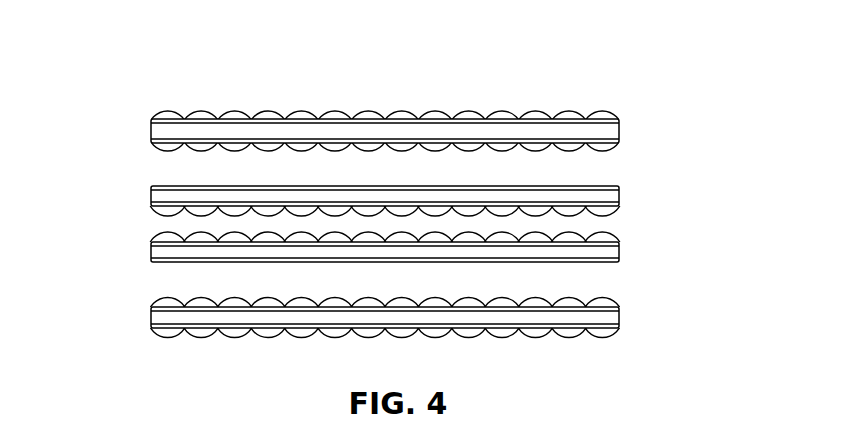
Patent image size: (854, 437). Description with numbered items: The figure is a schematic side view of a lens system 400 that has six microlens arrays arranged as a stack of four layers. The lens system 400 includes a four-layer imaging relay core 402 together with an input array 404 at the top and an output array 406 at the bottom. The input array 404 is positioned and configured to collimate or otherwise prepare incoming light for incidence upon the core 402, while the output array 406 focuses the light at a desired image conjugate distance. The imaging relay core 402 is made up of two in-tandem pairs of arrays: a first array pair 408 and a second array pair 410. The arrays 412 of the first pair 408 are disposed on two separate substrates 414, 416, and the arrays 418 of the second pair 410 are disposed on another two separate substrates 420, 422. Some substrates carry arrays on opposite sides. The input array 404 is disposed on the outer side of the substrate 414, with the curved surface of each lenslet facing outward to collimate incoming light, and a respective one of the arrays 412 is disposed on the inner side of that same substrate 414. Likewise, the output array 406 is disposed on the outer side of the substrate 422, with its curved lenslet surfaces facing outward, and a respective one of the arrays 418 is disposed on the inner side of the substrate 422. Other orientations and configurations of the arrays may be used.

The lens system 400 is at (600, 38).
The imaging relay core 402 is at (120, 132).
The input array 404 is at (620, 116).
The output array 406 is at (623, 332).
The first array pair 408 is at (623, 135).
The second array pair 410 is at (623, 230).
The arrays of the first pair 412 is at (190, 147).
The substrate 414 is at (150, 132).
The substrate 416 is at (305, 185).
The arrays of the second pair 418 is at (150, 237).
The substrate 420 is at (312, 263).
The substrate 422 is at (150, 319).